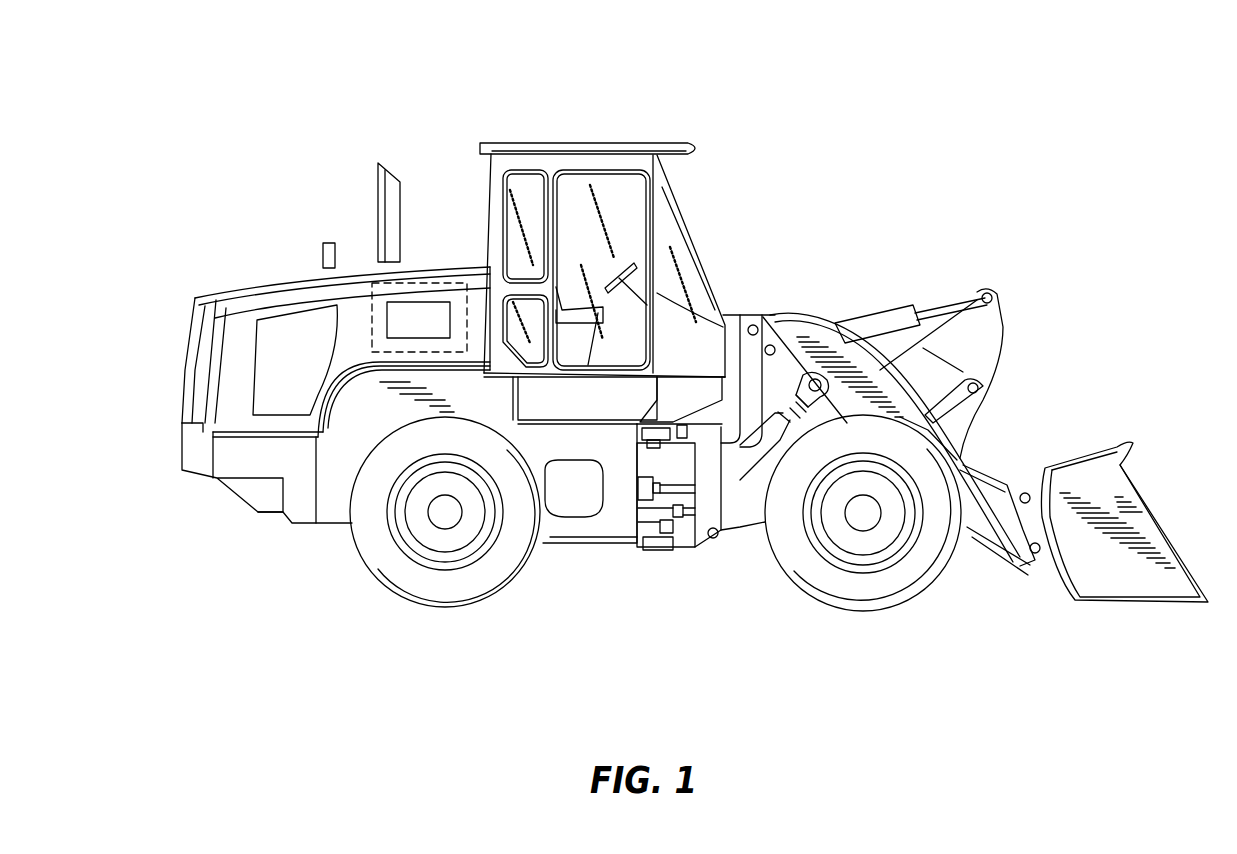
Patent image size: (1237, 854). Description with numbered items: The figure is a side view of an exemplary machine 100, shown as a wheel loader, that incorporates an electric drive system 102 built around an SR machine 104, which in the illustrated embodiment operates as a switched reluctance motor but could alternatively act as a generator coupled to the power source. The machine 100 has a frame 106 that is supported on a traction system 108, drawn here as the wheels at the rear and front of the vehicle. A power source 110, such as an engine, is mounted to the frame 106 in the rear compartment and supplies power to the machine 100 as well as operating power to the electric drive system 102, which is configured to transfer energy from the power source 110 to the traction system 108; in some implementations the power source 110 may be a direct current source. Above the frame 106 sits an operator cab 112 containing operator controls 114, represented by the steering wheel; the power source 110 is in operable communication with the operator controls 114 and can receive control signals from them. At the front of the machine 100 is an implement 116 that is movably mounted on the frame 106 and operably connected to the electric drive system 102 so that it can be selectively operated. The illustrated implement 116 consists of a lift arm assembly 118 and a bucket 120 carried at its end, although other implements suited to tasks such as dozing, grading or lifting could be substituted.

The machine 100 is at (897, 117).
The electric drive system 102 is at (431, 279).
The SR machine 104 is at (396, 316).
The frame 106 is at (338, 483).
The traction system 108 is at (513, 600).
The power source 110 is at (285, 330).
The operator cab 112 is at (640, 170).
The operator controls 114 is at (620, 273).
The implement 116 is at (1002, 465).
The lift arm assembly 118 is at (850, 357).
The bucket 120 is at (1128, 564).